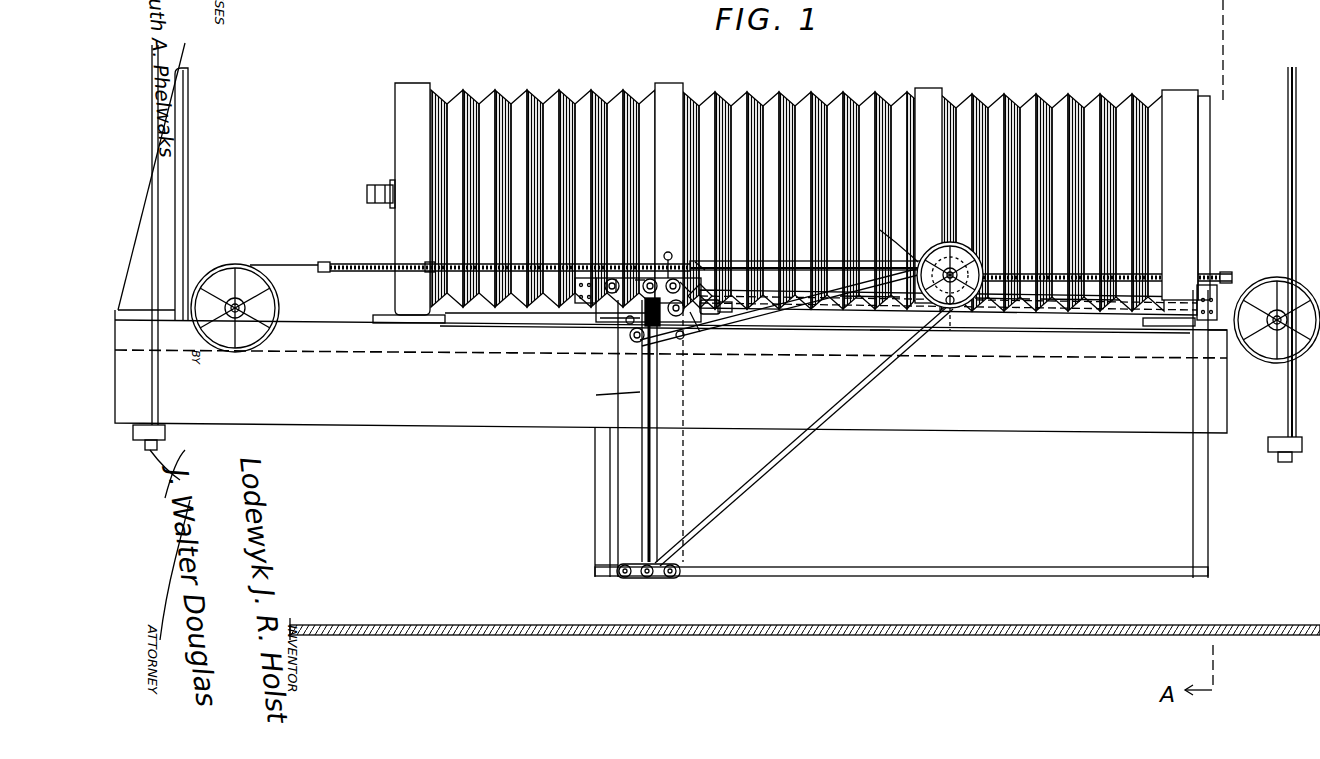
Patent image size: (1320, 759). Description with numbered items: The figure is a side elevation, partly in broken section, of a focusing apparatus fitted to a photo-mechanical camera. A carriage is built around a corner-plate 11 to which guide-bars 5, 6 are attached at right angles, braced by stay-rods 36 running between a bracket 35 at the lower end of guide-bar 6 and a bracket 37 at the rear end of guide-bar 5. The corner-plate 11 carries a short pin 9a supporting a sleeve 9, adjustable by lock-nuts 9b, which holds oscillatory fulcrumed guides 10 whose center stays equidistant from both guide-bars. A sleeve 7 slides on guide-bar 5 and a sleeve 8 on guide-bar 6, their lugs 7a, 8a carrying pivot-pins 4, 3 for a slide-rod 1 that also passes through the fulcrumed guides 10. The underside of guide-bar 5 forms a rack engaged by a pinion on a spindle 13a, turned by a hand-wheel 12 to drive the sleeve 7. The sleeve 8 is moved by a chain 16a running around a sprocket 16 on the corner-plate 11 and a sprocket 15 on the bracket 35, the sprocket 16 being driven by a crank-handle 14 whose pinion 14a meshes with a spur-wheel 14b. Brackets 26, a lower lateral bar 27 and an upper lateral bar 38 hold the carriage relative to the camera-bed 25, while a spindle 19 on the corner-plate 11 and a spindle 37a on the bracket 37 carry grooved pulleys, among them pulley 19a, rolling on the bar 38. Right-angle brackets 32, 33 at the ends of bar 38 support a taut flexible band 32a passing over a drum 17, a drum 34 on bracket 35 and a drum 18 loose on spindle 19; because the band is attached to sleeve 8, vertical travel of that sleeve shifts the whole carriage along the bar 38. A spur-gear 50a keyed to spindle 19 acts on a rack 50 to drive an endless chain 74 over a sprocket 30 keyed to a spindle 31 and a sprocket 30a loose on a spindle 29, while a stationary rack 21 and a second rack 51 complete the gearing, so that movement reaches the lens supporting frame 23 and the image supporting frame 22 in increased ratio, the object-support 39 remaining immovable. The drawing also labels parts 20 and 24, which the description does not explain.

The slide-rod 1 is at (810, 326).
The pivot-pin 3 is at (636, 343).
The pivot-pin 4 is at (940, 256).
The guide-bar 5 is at (770, 261).
The guide-bar 6 is at (650, 462).
The sleeve 7 is at (955, 250).
The lug 7a is at (888, 238).
The sleeve 8 is at (658, 330).
The lug 8a is at (627, 324).
The sleeve 9 is at (712, 316).
The short pin 9a is at (730, 314).
The lock-nuts 9b is at (708, 290).
The oscillatory fulcrumed guides 10 is at (700, 332).
The corner-plate 11 is at (640, 279).
The hand-wheel 12 is at (990, 312).
The spindle 13a is at (605, 320).
The crank-handle 14 is at (668, 278).
The pinion 14a is at (700, 264).
The spur-wheel 14b is at (682, 340).
The sprocket 15 is at (672, 580).
The sprocket 16 is at (678, 318).
The chain 16a is at (685, 458).
The drum 17 is at (607, 294).
The drum 18 is at (644, 292).
The spindle 19 is at (616, 279).
The grooved pulley 19a is at (668, 252).
The bearing 20 is at (432, 272).
The stationary rack 21 is at (862, 308).
The image supporting frame 22 is at (1186, 195).
The lens supporting frame 23 is at (409, 203).
The threaded rod 24 is at (1148, 274).
The camera-bed 25 is at (671, 371).
The brackets 26 is at (596, 470).
The lower lateral bar 27 is at (900, 567).
The spindle 29 is at (1275, 330).
The sprocket 30 is at (237, 265).
The sprocket 30a is at (1268, 262).
The spindle 31 is at (240, 303).
The right-angle bracket 32 is at (598, 283).
The flexible band 32a is at (596, 395).
The right-angle bracket 33 is at (1217, 292).
The drum 34 is at (622, 580).
The bracket 35 is at (648, 580).
The stay-rods 36 is at (776, 465).
The bracket 37 is at (972, 262).
The spindle 37a is at (950, 332).
The upper lateral bar 38 is at (1175, 316).
The object-support 39 is at (188, 178).
The rack 50 is at (372, 264).
The spur-gear 50a is at (681, 282).
The rack 51 is at (1078, 283).
The endless chain 74 is at (399, 352).